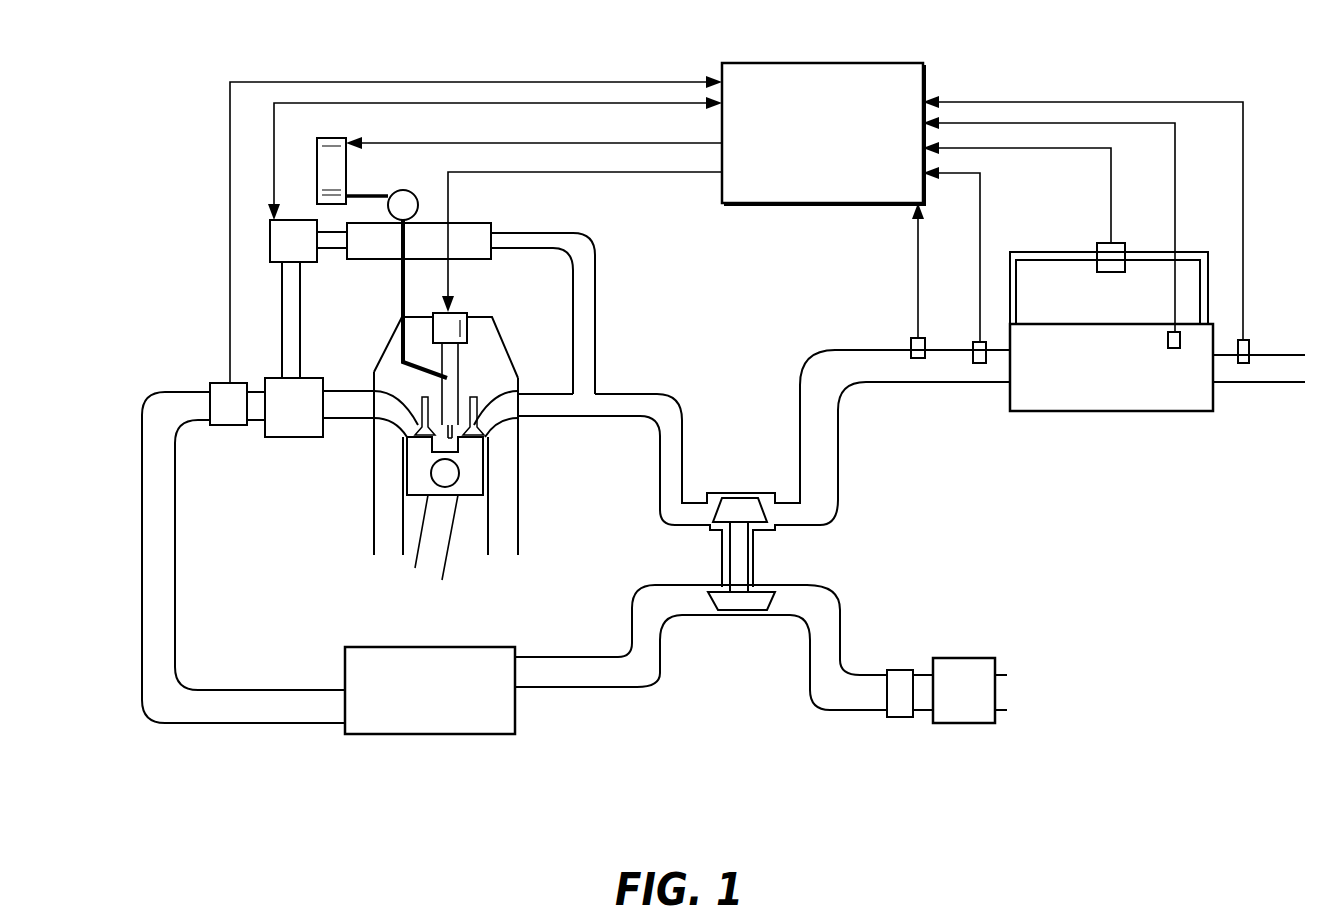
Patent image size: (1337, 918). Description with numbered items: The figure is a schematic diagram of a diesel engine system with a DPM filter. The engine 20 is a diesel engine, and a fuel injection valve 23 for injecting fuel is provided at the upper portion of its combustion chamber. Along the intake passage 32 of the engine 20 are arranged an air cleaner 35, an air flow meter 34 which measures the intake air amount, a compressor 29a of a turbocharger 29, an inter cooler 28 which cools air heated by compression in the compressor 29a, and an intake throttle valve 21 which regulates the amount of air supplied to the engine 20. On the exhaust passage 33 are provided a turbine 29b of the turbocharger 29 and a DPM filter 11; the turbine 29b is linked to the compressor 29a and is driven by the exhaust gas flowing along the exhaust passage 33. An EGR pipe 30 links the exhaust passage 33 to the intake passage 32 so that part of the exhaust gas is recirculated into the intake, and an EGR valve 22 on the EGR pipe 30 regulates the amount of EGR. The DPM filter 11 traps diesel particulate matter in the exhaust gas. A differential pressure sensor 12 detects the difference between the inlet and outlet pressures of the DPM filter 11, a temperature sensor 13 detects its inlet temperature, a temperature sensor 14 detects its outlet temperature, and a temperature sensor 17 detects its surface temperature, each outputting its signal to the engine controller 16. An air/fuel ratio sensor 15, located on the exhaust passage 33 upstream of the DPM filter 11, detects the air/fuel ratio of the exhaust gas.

The DPM filter 11 is at (1112, 400).
The differential pressure sensor 12 is at (1097, 245).
The temperature sensor 13 is at (973, 358).
The temperature sensor 14 is at (1249, 345).
The air/fuel ratio sensor 15 is at (911, 340).
The engine controller 16 is at (900, 63).
The temperature sensor 17 is at (1178, 346).
The engine 20 is at (518, 507).
The intake throttle valve 21 is at (226, 380).
The EGR valve 22 is at (270, 235).
The fuel injection valve 23 is at (460, 307).
The inter cooler 28 is at (478, 734).
The turbocharger 29 is at (788, 562).
The compressor 29a is at (738, 605).
The turbine 29b is at (733, 505).
The EGR pipe 30 is at (597, 270).
The intake passage 32 is at (593, 687).
The exhaust passage 33 is at (606, 416).
The air flow meter 34 is at (900, 717).
The air cleaner 35 is at (960, 723).